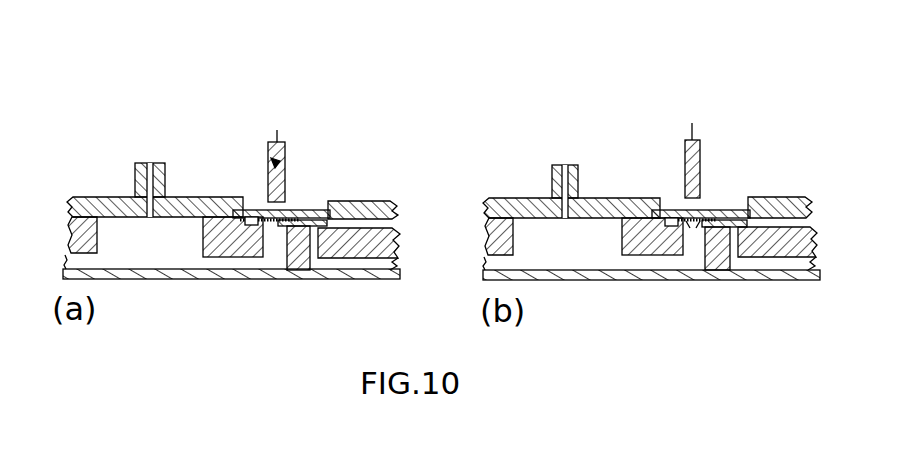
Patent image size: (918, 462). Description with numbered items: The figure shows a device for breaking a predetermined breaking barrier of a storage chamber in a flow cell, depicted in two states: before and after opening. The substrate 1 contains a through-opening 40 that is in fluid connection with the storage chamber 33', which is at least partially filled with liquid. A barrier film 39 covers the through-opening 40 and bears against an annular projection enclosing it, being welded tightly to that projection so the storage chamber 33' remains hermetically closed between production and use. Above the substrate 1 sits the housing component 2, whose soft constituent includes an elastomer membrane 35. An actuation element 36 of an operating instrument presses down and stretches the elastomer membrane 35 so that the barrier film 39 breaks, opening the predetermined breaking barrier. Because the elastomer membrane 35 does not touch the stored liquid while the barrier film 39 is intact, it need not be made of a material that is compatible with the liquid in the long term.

The substrate 1 is at (490, 240).
The housing component 2 is at (508, 200).
The storage chamber 33' is at (163, 272).
The elastomer membrane 35 is at (735, 212).
The actuation element 36 is at (688, 158).
The barrier film 39 is at (278, 225).
The through-opening 40 is at (694, 240).